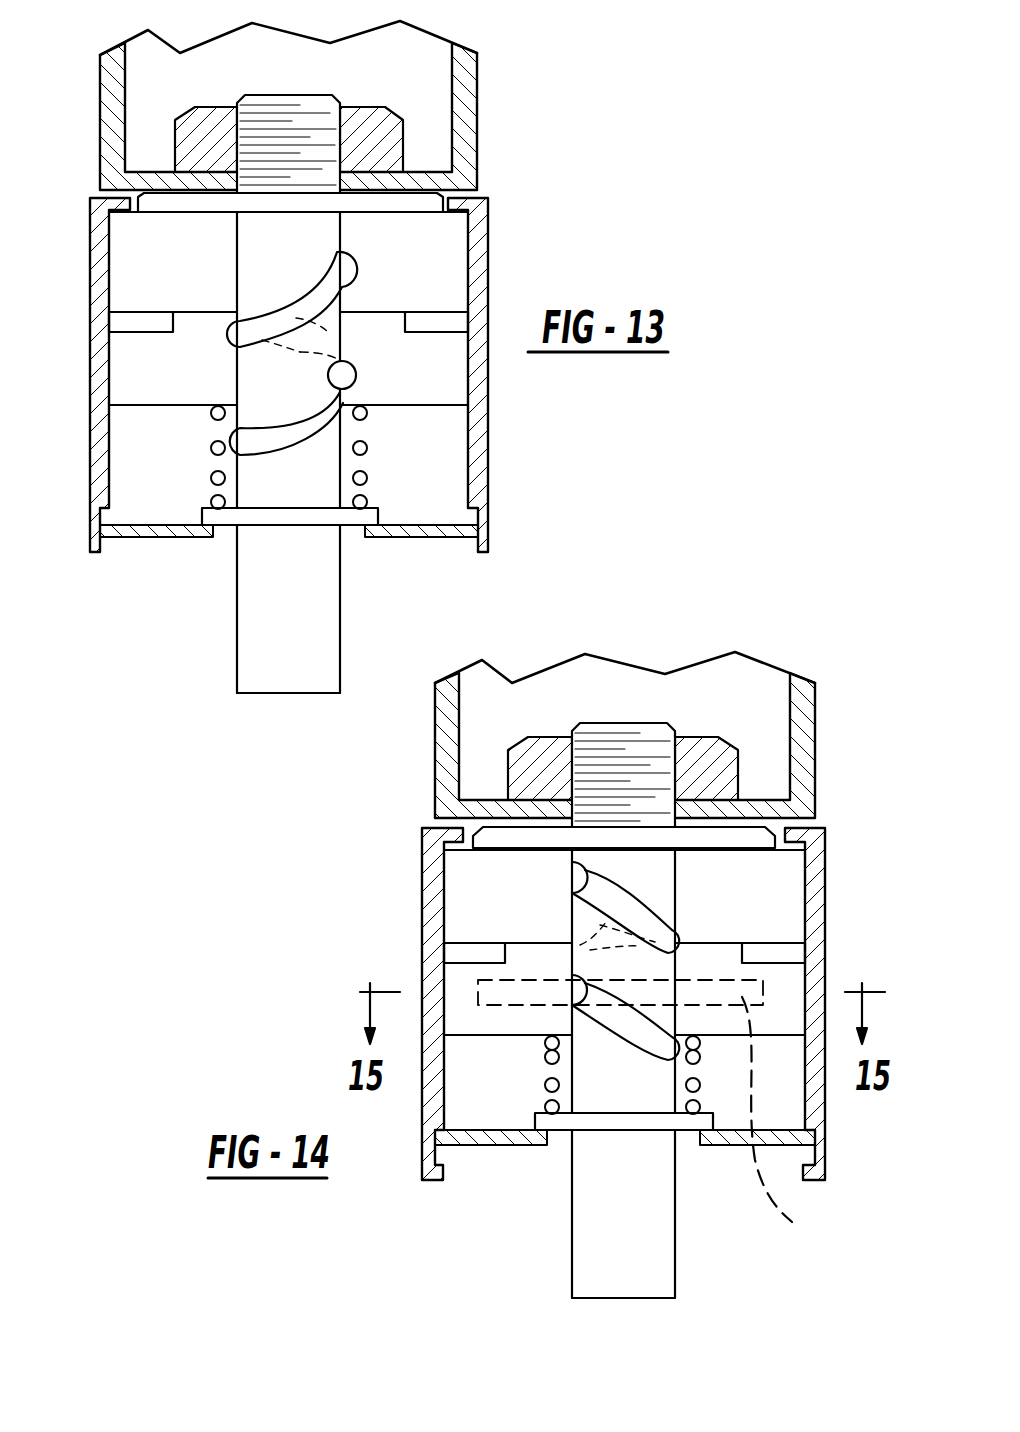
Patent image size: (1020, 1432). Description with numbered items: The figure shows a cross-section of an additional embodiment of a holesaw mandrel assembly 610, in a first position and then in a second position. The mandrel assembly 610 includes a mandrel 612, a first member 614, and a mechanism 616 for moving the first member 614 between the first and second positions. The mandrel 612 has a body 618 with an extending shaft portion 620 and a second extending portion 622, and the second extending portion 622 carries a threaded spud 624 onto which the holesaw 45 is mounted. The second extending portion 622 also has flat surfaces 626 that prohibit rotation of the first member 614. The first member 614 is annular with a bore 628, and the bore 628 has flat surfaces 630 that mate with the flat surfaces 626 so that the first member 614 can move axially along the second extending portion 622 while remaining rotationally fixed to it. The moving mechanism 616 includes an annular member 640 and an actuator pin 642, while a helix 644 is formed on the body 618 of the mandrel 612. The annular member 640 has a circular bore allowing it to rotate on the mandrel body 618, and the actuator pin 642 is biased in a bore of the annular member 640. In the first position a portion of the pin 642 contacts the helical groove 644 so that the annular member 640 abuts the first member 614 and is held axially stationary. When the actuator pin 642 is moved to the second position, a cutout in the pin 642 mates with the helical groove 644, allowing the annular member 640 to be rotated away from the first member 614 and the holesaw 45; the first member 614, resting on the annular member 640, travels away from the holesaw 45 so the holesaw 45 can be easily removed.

In FIG. 13, the holesaw 45 is at (468, 110).
In FIG. 13, the mandrel assembly 610 is at (626, 210).
In FIG. 13, the mandrel 612 is at (180, 598).
In FIG. 13, the first member 614 is at (443, 242).
In FIG. 14, the first member 614 is at (782, 872).
In FIG. 13, the mechanism 616 is at (536, 400).
In FIG. 13, the body 618 is at (318, 473).
In FIG. 13, the shaft portion 620 is at (257, 662).
In FIG. 13, the second extending portion 622 is at (417, 105).
In FIG. 13, the threaded spud 624 is at (288, 122).
In FIG. 13, the flat surfaces 626 is at (240, 271).
In FIG. 13, the bore 628 is at (334, 150).
In FIG. 13, the flat surfaces 630 is at (240, 271).
In FIG. 14, the annular member 640 is at (783, 975).
In FIG. 14, the actuator pin 642 is at (783, 1121).
In FIG. 14, the helix 644 is at (592, 908).